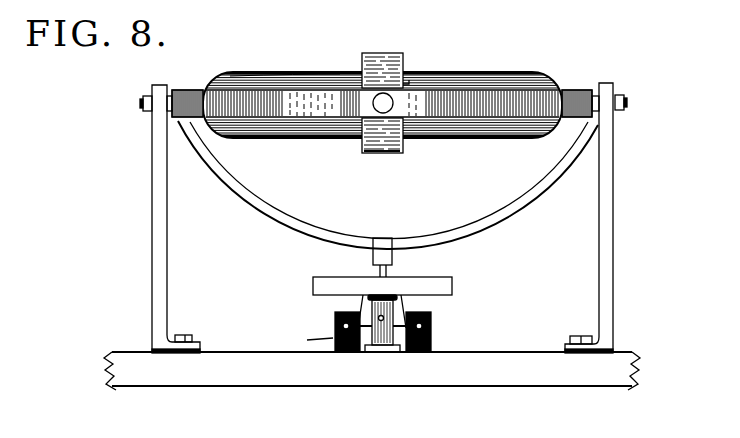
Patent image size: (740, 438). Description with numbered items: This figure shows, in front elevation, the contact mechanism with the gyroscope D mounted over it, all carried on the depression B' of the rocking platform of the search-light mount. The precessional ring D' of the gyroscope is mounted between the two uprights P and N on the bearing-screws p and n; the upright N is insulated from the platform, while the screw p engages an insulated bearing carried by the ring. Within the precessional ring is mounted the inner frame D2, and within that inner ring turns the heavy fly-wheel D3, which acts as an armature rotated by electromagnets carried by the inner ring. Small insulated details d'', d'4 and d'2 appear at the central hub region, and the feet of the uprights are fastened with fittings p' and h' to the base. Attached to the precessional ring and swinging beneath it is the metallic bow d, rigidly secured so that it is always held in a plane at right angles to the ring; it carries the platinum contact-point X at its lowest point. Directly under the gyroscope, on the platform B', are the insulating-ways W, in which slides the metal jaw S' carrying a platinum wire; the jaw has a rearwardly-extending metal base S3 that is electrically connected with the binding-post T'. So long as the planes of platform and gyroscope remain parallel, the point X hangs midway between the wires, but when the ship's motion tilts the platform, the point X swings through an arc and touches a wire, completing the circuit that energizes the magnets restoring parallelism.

The gyroscope D is at (383, 126).
The precessional ring D' is at (382, 81).
The inner frame D2 is at (380, 53).
The fly-wheel D3 is at (312, 73).
The flange d'' is at (425, 66).
The pivot pin d'4 is at (359, 126).
The lower block of drum d'2 is at (397, 146).
The metallic bow d is at (388, 193).
The upright P is at (160, 231).
The bearing-screw p is at (135, 120).
The foot screw p' is at (198, 329).
The upright N is at (613, 207).
The bearing-screw n is at (622, 106).
The foot screw h' is at (573, 330).
The metal jaw S' is at (406, 285).
The metal base S3 is at (314, 335).
The platinum contact-point X is at (385, 271).
The insulating-ways W is at (430, 392).
The binding-post T' is at (382, 357).
The depression of the rocking platform B' is at (372, 391).